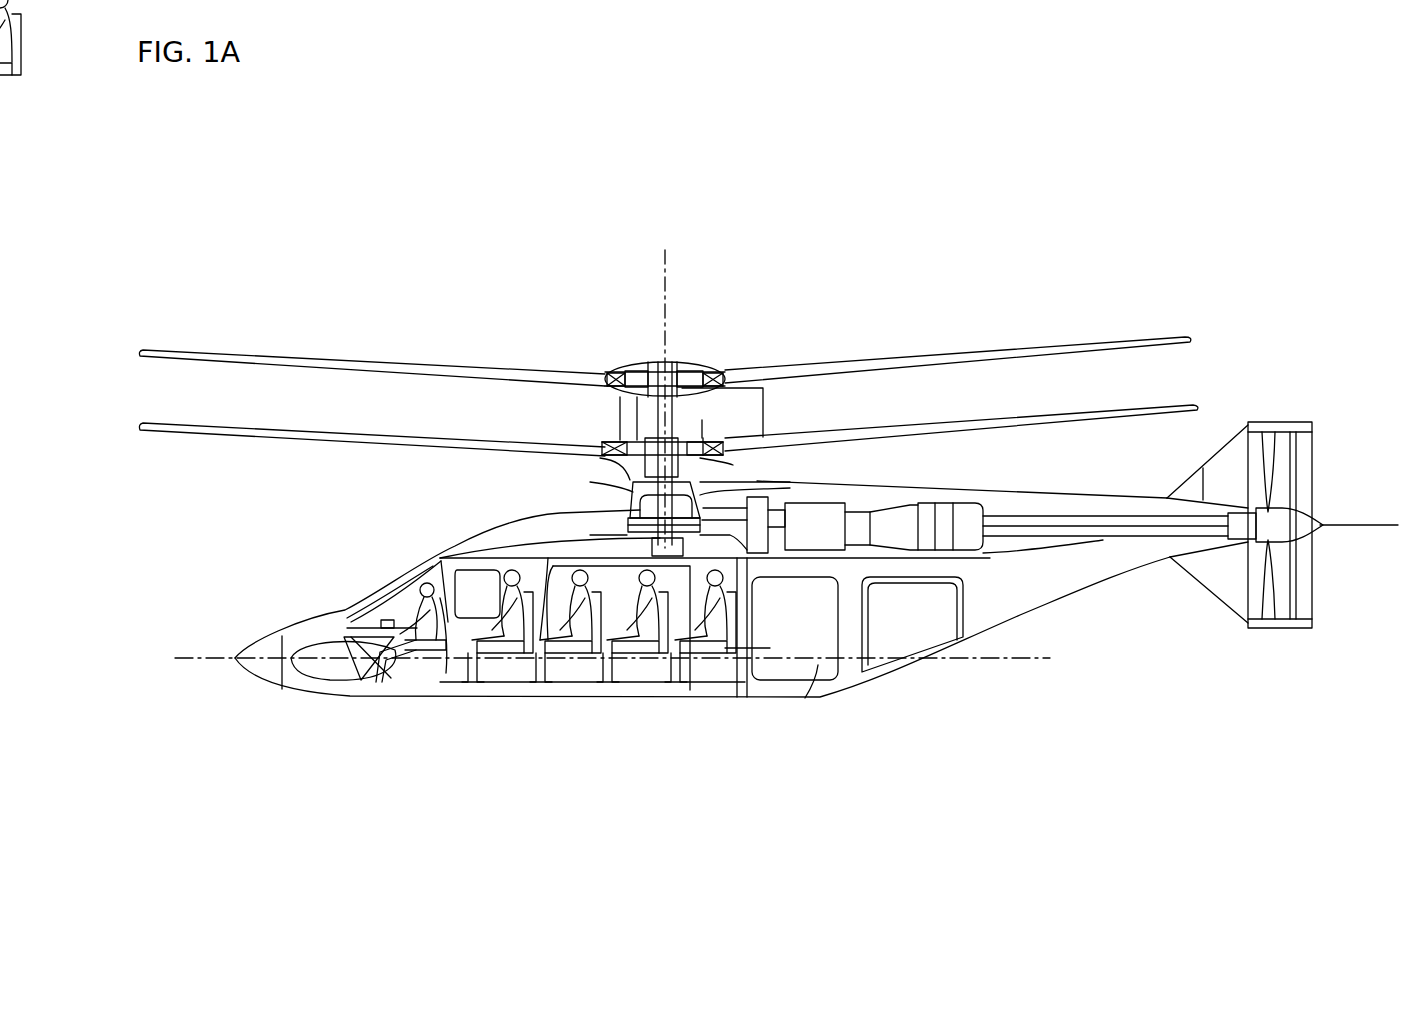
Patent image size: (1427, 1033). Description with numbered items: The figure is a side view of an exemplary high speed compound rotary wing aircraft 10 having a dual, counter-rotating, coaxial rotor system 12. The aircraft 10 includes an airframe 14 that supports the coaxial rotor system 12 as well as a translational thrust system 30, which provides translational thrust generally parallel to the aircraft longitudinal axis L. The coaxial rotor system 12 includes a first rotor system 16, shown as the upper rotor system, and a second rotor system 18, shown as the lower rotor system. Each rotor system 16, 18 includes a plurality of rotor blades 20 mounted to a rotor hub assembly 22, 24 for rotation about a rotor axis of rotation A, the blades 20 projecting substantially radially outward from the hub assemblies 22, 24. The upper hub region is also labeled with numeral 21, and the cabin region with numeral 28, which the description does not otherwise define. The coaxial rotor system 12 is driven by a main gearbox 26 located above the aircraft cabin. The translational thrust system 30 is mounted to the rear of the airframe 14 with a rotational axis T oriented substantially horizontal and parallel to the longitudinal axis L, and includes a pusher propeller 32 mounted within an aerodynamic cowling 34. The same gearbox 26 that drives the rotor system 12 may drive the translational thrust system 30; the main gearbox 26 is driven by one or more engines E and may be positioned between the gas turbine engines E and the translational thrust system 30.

The high speed compound rotary wing aircraft 10 is at (992, 316).
The dual, counter-rotating, coaxial rotor system 12 is at (735, 356).
The airframe 14 is at (479, 538).
The first rotor system 16 is at (642, 364).
The second rotor system 18 is at (604, 449).
The rotor blades 20 is at (878, 432).
The upper rotor hub 21 is at (610, 373).
The rotor hub assembly 22 is at (692, 364).
The rotor hub assembly 24 is at (712, 433).
The main gearbox 26 is at (634, 511).
The cabin floor 28 is at (573, 667).
The translational thrust system 30 is at (1334, 466).
The pusher propeller 32 is at (1278, 494).
The aerodynamic cowling 34 is at (1272, 430).
The rotor axis of rotation A is at (672, 259).
The engine E is at (893, 525).
The rotational axis T is at (1362, 528).
The aircraft longitudinal axis L is at (1044, 657).